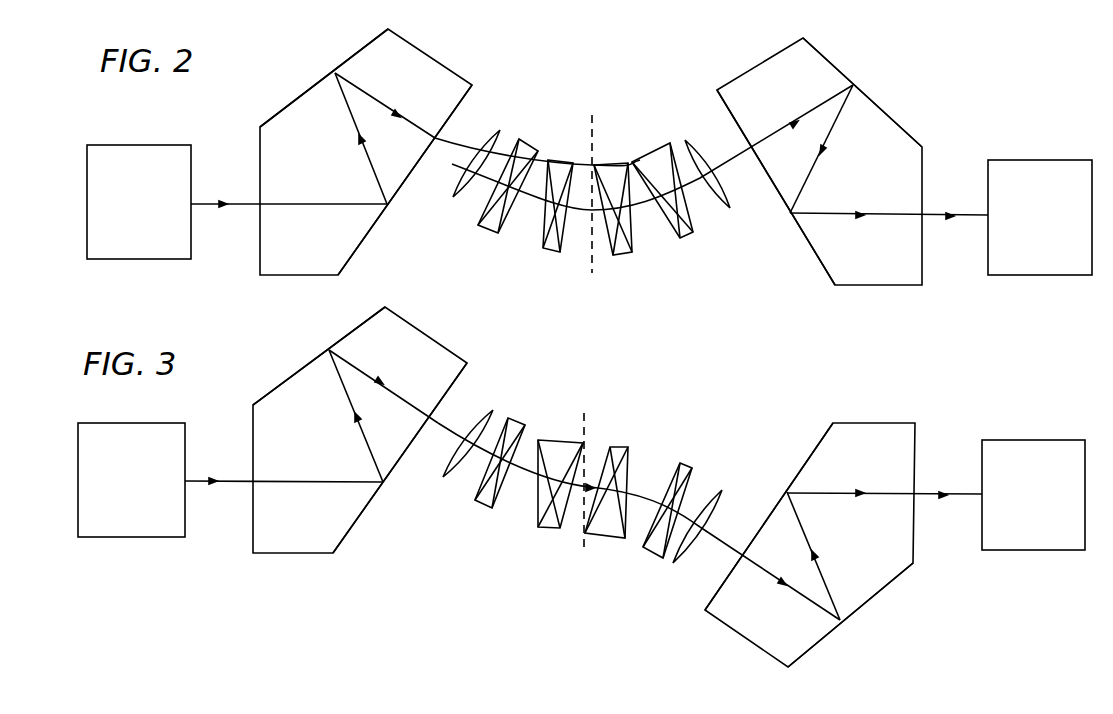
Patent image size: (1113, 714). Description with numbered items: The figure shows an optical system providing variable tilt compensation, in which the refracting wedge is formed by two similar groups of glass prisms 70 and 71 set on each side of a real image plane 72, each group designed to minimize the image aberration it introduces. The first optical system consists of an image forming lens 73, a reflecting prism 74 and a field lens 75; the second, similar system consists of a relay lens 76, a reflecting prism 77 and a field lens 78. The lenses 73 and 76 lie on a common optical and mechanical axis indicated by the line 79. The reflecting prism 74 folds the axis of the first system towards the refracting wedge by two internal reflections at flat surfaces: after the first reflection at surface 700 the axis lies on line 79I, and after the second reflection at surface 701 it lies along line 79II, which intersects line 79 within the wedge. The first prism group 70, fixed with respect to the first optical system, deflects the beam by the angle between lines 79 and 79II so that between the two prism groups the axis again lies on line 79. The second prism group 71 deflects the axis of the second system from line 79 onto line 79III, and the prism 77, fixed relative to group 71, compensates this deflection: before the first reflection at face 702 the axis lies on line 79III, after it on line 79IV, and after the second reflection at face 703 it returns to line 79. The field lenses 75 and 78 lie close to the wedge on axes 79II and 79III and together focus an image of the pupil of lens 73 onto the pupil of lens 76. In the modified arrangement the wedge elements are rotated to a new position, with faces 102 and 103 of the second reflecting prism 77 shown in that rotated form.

In FIG. 2, the image forming lens 73 is at (139, 202).
In FIG. 3, the image forming lens 73 is at (131, 480).
In FIG. 2, the reflecting prism 74 is at (366, 152).
In FIG. 3, the reflecting prism 74 is at (303, 543).
In FIG. 2, the field lens 75 is at (477, 168).
In FIG. 3, the field lens 75 is at (467, 443).
In FIG. 2, the relay lens 76 is at (1040, 217).
In FIG. 3, the relay lens 76 is at (1033, 495).
In FIG. 2, the reflecting prism 77 is at (819, 161).
In FIG. 3, the reflecting prism 77 is at (753, 633).
In FIG. 2, the field lens 78 is at (693, 138).
In FIG. 3, the field lens 78 is at (722, 492).
In FIG. 2, the optical and mechanical axis 79 is at (213, 206).
In FIG. 3, the optical and mechanical axis 79 is at (203, 483).
In FIG. 2, the optical axis line after first reflection 79I is at (347, 108).
In FIG. 3, the optical axis line after first reflection 79I is at (343, 392).
In FIG. 2, the optical axis line after second reflection 79II is at (447, 142).
In FIG. 3, the optical axis line after second reflection 79II is at (440, 422).
In FIG. 2, the optical axis line before first reflection 79III is at (733, 160).
In FIG. 3, the optical axis line before first reflection 79III is at (720, 542).
In FIG. 2, the optical axis line after first reflection 79IV is at (840, 117).
In FIG. 3, the optical axis line after first reflection 79IV is at (840, 607).
In FIG. 2, the first prism group 70 is at (557, 153).
In FIG. 3, the first prism group 70 is at (552, 440).
In FIG. 2, the second prism group 71 is at (640, 156).
In FIG. 3, the second prism group 71 is at (600, 540).
In FIG. 2, the real image plane 72 is at (593, 114).
In FIG. 3, the real image plane 72 is at (588, 413).
In FIG. 2, the surface 700 is at (357, 237).
In FIG. 3, the surface 700 is at (352, 528).
In FIG. 2, the surface 701 is at (353, 55).
In FIG. 3, the surface 701 is at (347, 333).
In FIG. 2, the face 702 is at (897, 123).
In FIG. 2, the face 703 is at (815, 257).
In FIG. 3, the reflecting face of second prism 102 is at (890, 583).
In FIG. 3, the entrance face of second prism 103 is at (817, 445).